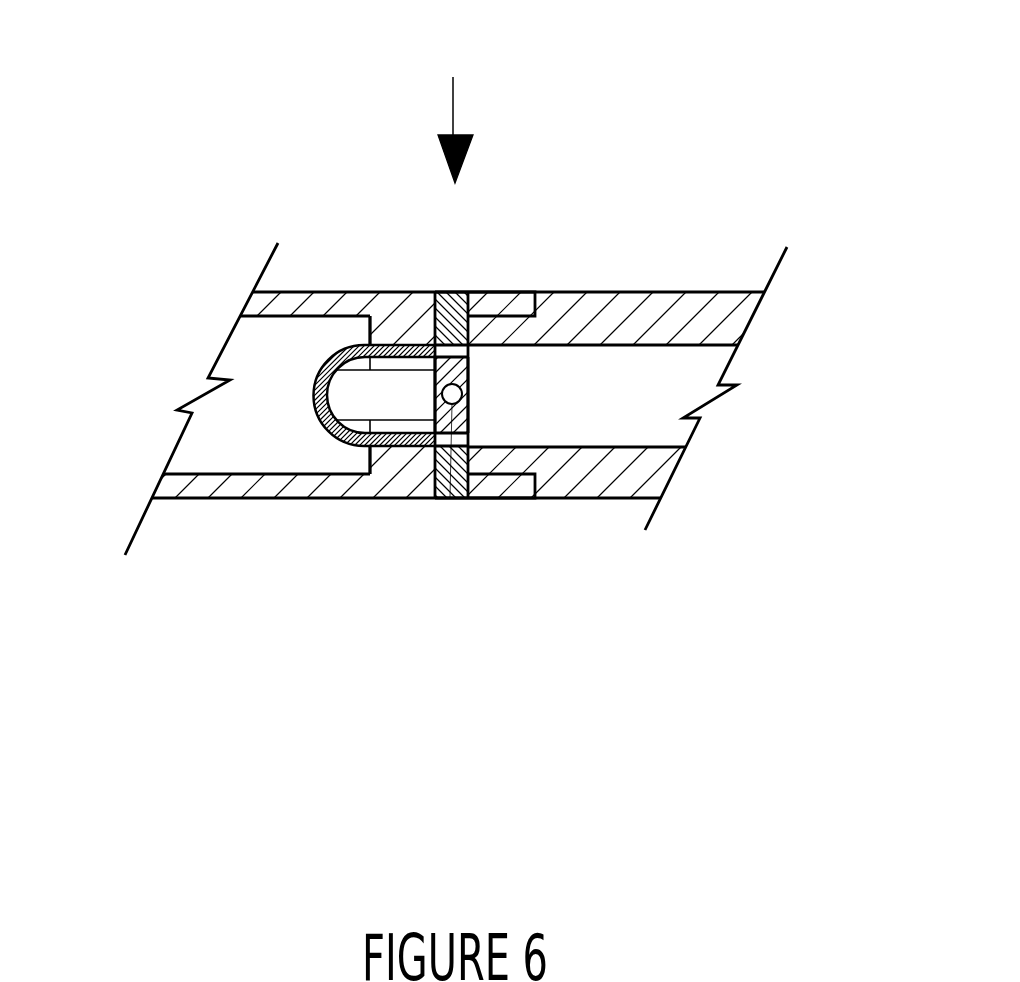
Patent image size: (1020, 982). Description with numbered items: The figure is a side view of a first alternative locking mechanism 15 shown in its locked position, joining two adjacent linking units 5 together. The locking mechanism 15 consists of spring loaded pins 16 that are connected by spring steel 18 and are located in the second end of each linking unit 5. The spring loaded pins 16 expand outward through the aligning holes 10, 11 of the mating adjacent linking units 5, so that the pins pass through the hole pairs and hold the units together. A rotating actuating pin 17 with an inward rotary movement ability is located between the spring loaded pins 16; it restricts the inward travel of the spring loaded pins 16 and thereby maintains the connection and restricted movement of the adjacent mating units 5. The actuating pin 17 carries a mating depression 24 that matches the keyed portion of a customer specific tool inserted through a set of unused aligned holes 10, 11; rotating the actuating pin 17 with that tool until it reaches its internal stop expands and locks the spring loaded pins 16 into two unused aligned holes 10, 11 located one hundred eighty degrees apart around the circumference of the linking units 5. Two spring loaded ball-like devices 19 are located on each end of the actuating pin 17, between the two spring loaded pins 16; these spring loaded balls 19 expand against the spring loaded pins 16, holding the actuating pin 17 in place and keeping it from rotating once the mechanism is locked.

The linking unit 5 is at (624, 294).
The aligning hole 10 is at (467, 498).
The aligning hole 11 is at (488, 294).
The first alternative locking mechanism 15 is at (462, 91).
The spring loaded pin 16 is at (452, 293).
The rotating actuating pin 17 is at (462, 394).
The spring steel 18 is at (317, 390).
The spring loaded ball-like device 19 is at (412, 300).
The mating depression 24 is at (435, 498).